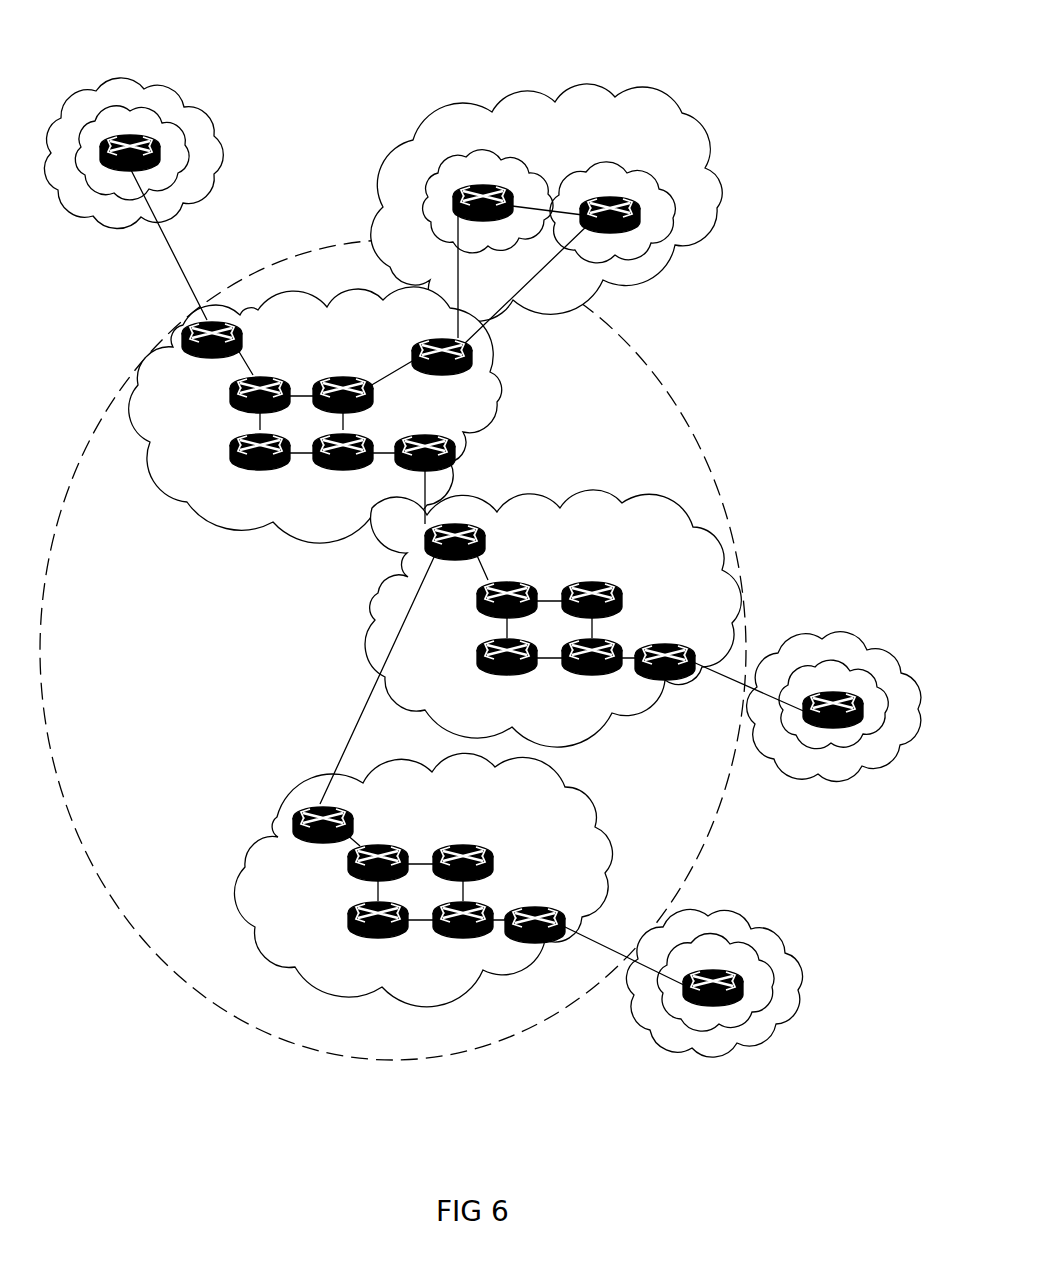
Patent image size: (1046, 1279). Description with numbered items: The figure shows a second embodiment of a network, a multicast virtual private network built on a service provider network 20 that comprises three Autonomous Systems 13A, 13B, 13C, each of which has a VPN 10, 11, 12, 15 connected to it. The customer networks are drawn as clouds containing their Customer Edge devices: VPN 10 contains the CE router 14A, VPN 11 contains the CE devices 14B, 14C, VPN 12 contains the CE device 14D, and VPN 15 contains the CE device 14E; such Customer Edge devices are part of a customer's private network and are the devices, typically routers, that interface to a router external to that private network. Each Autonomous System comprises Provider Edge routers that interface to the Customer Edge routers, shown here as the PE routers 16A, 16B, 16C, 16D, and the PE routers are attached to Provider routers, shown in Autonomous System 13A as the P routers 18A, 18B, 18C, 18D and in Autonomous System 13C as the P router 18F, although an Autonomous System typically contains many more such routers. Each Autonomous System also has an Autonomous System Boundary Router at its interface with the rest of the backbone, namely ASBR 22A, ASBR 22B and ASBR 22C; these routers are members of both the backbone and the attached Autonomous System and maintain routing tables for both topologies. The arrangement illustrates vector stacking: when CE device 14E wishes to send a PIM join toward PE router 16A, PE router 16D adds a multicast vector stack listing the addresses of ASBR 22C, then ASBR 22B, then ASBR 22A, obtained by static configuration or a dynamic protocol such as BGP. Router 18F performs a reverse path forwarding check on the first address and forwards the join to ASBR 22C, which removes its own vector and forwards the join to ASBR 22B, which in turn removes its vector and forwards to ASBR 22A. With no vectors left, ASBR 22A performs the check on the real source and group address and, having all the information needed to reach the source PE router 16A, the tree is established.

The VPN 10 is at (130, 87).
The VPN 11 is at (717, 197).
The VPN 12 is at (832, 642).
The VPN 15 is at (802, 983).
The Autonomous System 13A is at (317, 552).
The Autonomous System 13B is at (735, 622).
The Autonomous System 13C is at (603, 887).
The CE router 14A is at (103, 143).
The customer edge router 14B is at (460, 188).
The customer edge router 14C is at (633, 235).
The customer edge router 14D is at (858, 727).
The CE device 14E is at (733, 1008).
The PE router 16A is at (185, 330).
The PE router 16B is at (472, 355).
The provider edge router 16C is at (665, 678).
The PE router 16D is at (537, 940).
The P router 18A is at (278, 378).
The P router 18B is at (343, 376).
The P router 18C is at (258, 463).
The P router 18D is at (338, 467).
The router 18F is at (465, 935).
The ASBR 22A is at (462, 442).
The ASBR 22B is at (485, 538).
The ASBR 22C is at (335, 835).
The service provider network 20 is at (140, 940).